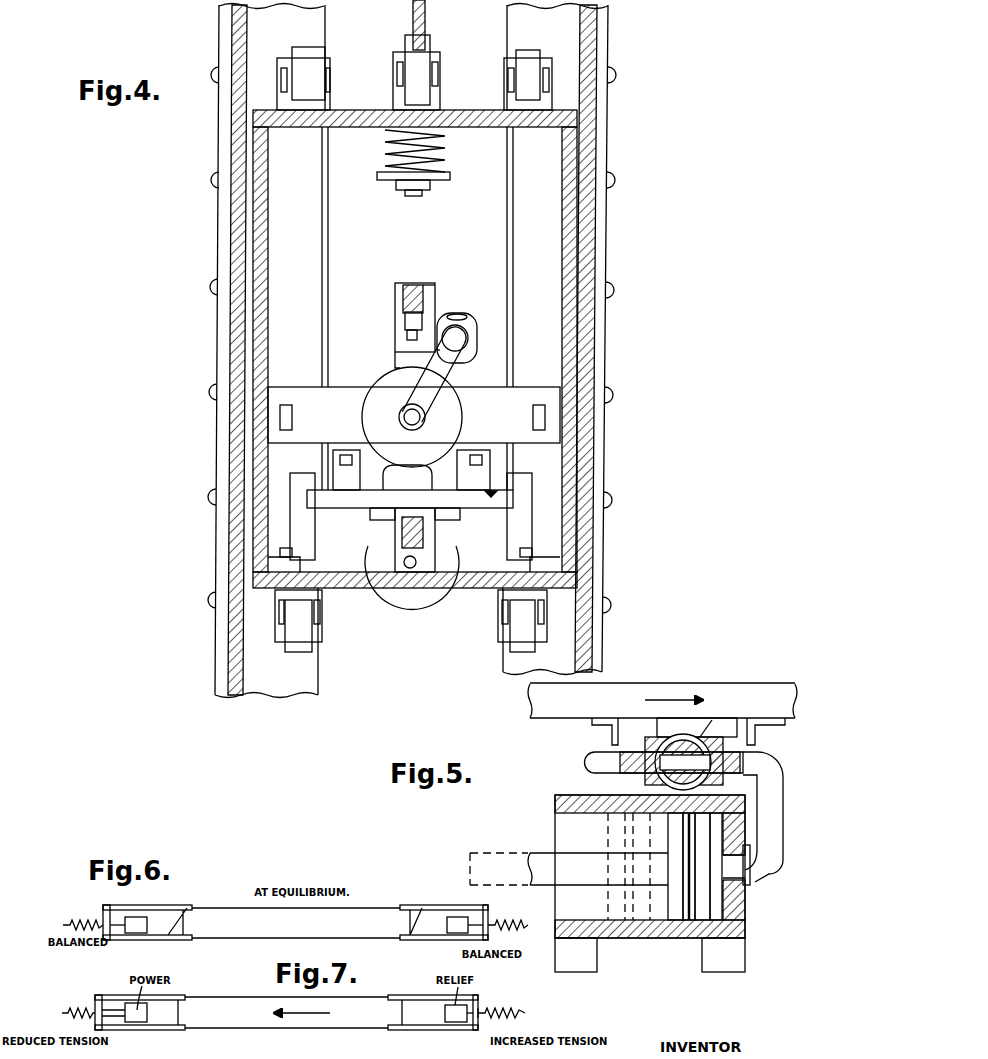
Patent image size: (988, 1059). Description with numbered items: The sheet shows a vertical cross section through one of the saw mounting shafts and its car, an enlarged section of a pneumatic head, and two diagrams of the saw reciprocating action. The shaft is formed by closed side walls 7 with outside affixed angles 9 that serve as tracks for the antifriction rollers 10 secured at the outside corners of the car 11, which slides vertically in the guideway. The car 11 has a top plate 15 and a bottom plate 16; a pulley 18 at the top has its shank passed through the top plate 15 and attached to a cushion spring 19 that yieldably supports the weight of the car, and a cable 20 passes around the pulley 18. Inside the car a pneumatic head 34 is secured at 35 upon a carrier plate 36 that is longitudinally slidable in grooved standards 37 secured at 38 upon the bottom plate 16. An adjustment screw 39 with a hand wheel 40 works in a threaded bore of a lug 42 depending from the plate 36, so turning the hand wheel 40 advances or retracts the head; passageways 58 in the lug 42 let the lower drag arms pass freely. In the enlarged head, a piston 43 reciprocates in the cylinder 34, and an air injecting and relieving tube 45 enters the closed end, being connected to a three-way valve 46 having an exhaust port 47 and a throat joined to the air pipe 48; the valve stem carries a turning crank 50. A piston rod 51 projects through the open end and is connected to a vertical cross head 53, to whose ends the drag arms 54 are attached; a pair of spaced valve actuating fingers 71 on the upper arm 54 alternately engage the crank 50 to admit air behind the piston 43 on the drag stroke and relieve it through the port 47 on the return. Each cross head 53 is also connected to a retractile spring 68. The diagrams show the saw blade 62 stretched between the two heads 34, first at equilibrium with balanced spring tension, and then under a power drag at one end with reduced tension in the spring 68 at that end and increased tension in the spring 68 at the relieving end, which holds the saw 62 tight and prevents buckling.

In FIG. 4, the closed side walls 7 is at (242, 333).
In FIG. 4, the outside affixed angles 9 is at (226, 256).
In FIG. 4, the antifriction rollers 10 is at (308, 58).
In FIG. 4, the car 11 is at (257, 225).
In FIG. 4, the top plate 15 is at (487, 110).
In FIG. 4, the bottom plate 16 is at (454, 590).
In FIG. 4, the pulley 18 is at (432, 48).
In FIG. 4, the cushion spring 19 is at (385, 160).
In FIG. 4, the cable 20 is at (412, 18).
In FIG. 4, the pneumatic head 34 is at (450, 423).
In FIG. 5, the pneumatic head 34 is at (642, 938).
In FIG. 6, the pneumatic head 34 is at (135, 920).
In FIG. 7, the pneumatic head 34 is at (140, 1022).
In FIG. 4, the securing means 35 is at (355, 458).
In FIG. 4, the carrier plate 36 is at (513, 495).
In FIG. 4, the grooved standards 37 is at (290, 525).
In FIG. 4, the securing means 38 is at (268, 565).
In FIG. 4, the adjustment screw 39 is at (402, 600).
In FIG. 4, the hand wheel 40 is at (416, 605).
In FIG. 4, the lug 42 is at (432, 540).
In FIG. 5, the piston 43 is at (670, 840).
In FIG. 4, the air injecting and relieving tube 45 is at (405, 392).
In FIG. 5, the air injecting and relieving tube 45 is at (752, 872).
In FIG. 4, the three-way valve 46 is at (465, 348).
In FIG. 5, the three-way valve 46 is at (640, 786).
In FIG. 4, the exhaust port 47 is at (472, 320).
In FIG. 5, the exhaust port 47 is at (714, 718).
In FIG. 5, the air pipe 48 is at (592, 763).
In FIG. 4, the turning crank 50 is at (407, 334).
In FIG. 5, the turning crank 50 is at (710, 718).
In FIG. 5, the piston rod 51 is at (535, 853).
In FIG. 4, the cross head 53 is at (430, 318).
In FIG. 7, the cross head 53 is at (479, 999).
In FIG. 4, the drag arms 54 is at (405, 296).
In FIG. 5, the drag arms 54 is at (736, 722).
In FIG. 6, the drag arms 54 is at (183, 912).
In FIG. 7, the drag arms 54 is at (180, 1000).
In FIG. 4, the passageways 58 is at (398, 528).
In FIG. 6, the belt 62 is at (222, 938).
In FIG. 7, the belt 62 is at (232, 1028).
In FIG. 6, the retractile spring 68 is at (80, 932).
In FIG. 7, the retractile spring 68 is at (80, 1010).
In FIG. 4, the valve actuating fingers 71 is at (406, 322).
In FIG. 5, the valve actuating fingers 71 is at (753, 740).